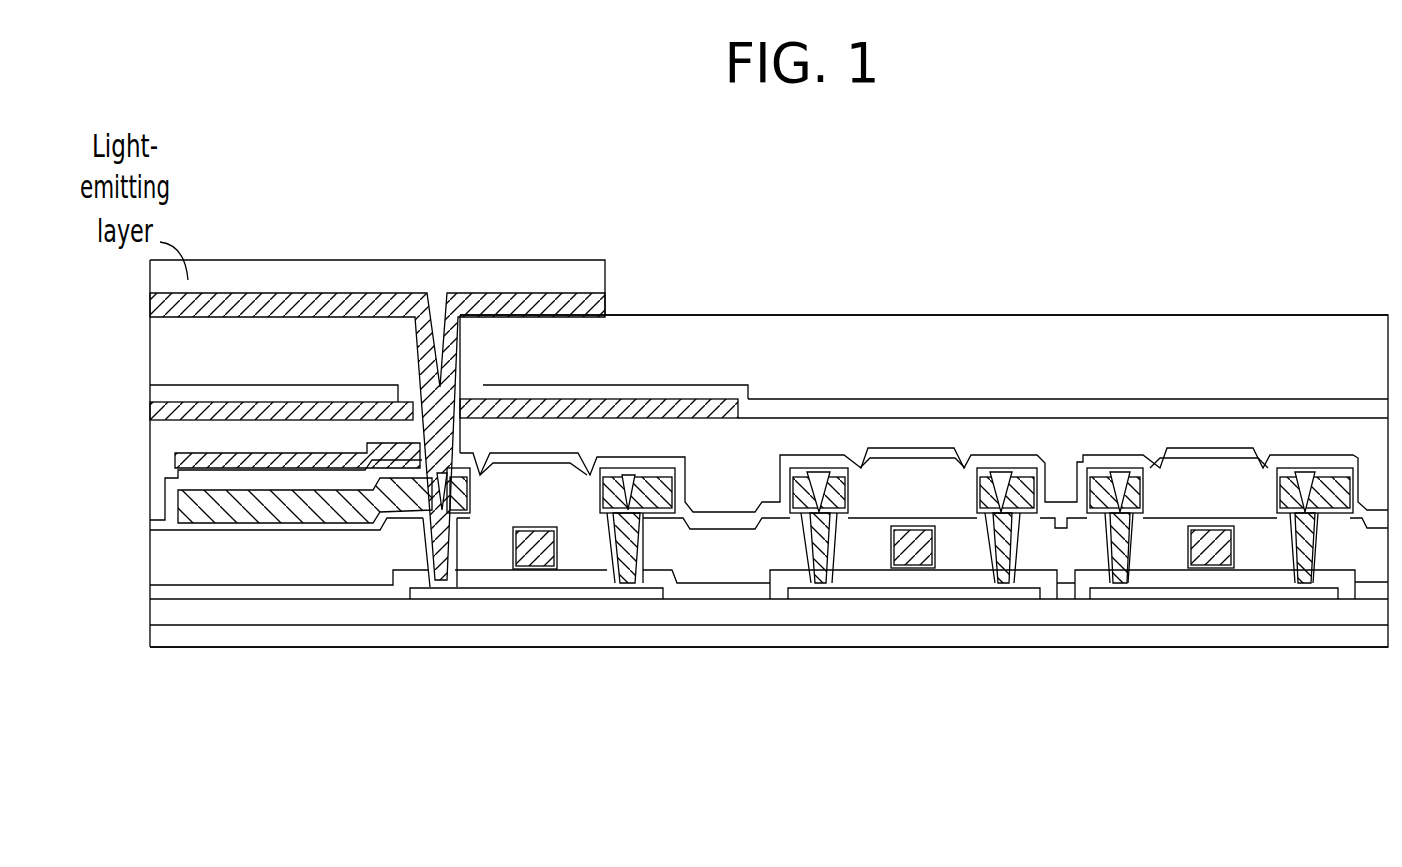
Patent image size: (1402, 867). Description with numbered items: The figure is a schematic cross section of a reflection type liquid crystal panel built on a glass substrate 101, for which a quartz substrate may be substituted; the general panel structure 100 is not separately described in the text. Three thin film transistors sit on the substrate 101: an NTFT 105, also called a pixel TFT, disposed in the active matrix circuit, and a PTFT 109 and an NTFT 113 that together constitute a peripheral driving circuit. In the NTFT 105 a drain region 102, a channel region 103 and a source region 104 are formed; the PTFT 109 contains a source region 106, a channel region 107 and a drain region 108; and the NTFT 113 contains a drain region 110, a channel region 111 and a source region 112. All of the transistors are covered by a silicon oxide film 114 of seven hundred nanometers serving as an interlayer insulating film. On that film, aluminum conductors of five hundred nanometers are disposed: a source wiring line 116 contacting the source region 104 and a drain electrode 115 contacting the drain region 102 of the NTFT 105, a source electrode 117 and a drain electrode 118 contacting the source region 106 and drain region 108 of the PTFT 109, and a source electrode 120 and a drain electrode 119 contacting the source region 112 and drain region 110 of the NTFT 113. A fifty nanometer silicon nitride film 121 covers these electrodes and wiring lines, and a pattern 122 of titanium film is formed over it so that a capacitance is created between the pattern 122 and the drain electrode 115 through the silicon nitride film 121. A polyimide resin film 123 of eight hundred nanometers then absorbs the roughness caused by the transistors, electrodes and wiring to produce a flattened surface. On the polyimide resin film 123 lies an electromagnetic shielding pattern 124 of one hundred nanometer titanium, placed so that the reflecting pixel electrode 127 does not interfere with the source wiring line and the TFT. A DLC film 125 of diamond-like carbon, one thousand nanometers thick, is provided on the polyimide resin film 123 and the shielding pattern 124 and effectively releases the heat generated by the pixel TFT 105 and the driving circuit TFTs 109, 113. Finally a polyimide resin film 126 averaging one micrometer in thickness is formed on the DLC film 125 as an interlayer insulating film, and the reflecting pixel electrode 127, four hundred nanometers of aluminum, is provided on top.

The buffer layer 100 is at (762, 592).
The glass substrate 101 is at (229, 633).
The drain region 102 is at (458, 600).
The channel region 103 is at (527, 597).
The source region 104 is at (621, 649).
The NTFT 105 is at (536, 684).
The source region 106 is at (865, 597).
The channel region 107 is at (925, 597).
The drain region 108 is at (1000, 643).
The PTFT 109 is at (916, 684).
The drain region 110 is at (1160, 597).
The channel region 111 is at (1215, 597).
The source region 112 is at (1299, 656).
The NTFT 113 is at (1217, 692).
The silicon oxide film 114 is at (710, 577).
The drain electrode 115 is at (327, 507).
The source wiring line 116 is at (653, 487).
The source electrode 117 is at (803, 480).
The drain electrode 118 is at (1030, 470).
The drain electrode 119 is at (1132, 473).
The source electrode 120 is at (1290, 473).
The silicon nitride film 121 is at (237, 477).
The pattern 122 is at (212, 462).
The polyimide resin film 123 is at (535, 437).
The electromagnetic shielding pattern 124 is at (316, 408).
The DLC film 125 is at (773, 407).
The polyimide resin film 126 is at (1113, 357).
The reflecting pixel electrode 127 is at (403, 300).